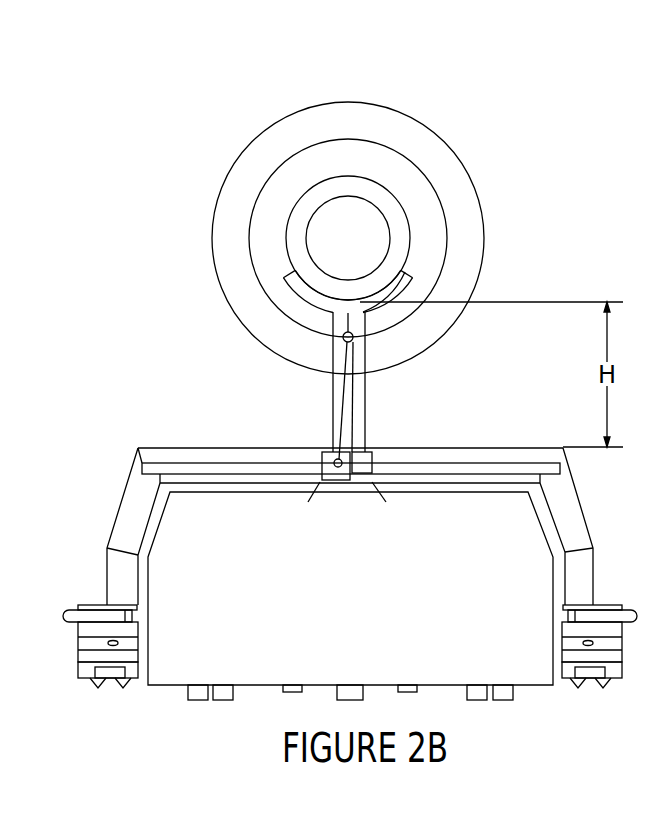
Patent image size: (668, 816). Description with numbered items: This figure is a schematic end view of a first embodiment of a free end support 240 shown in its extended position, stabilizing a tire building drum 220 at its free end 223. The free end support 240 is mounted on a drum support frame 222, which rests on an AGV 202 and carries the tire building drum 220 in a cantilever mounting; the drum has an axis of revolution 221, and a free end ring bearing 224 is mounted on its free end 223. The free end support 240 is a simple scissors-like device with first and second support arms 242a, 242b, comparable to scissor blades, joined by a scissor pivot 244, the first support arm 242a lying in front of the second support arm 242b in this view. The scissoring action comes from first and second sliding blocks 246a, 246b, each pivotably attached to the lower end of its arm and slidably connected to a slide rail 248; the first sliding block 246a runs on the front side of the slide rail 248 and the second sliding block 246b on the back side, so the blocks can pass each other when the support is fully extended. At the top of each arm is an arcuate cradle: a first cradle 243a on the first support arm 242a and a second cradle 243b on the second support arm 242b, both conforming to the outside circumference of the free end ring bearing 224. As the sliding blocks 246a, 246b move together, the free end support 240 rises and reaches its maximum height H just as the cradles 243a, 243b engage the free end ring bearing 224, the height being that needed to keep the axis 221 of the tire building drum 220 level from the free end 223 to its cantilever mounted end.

The AGV 202 is at (170, 668).
The tire building drum 220 is at (447, 215).
The axis of revolution 221 is at (348, 238).
The drum support frame 222 is at (108, 518).
The free end 223 is at (289, 179).
The free end ring bearing 224 is at (392, 189).
The free end support 240 is at (197, 395).
The first support arm 242a is at (340, 422).
The second support arm 242b is at (357, 400).
The first cradle 243a is at (302, 302).
The second cradle 243b is at (407, 271).
The scissor pivot 244 is at (357, 337).
The first sliding block 246a is at (326, 486).
The second sliding block 246b is at (362, 482).
The slide rail 248 is at (171, 467).